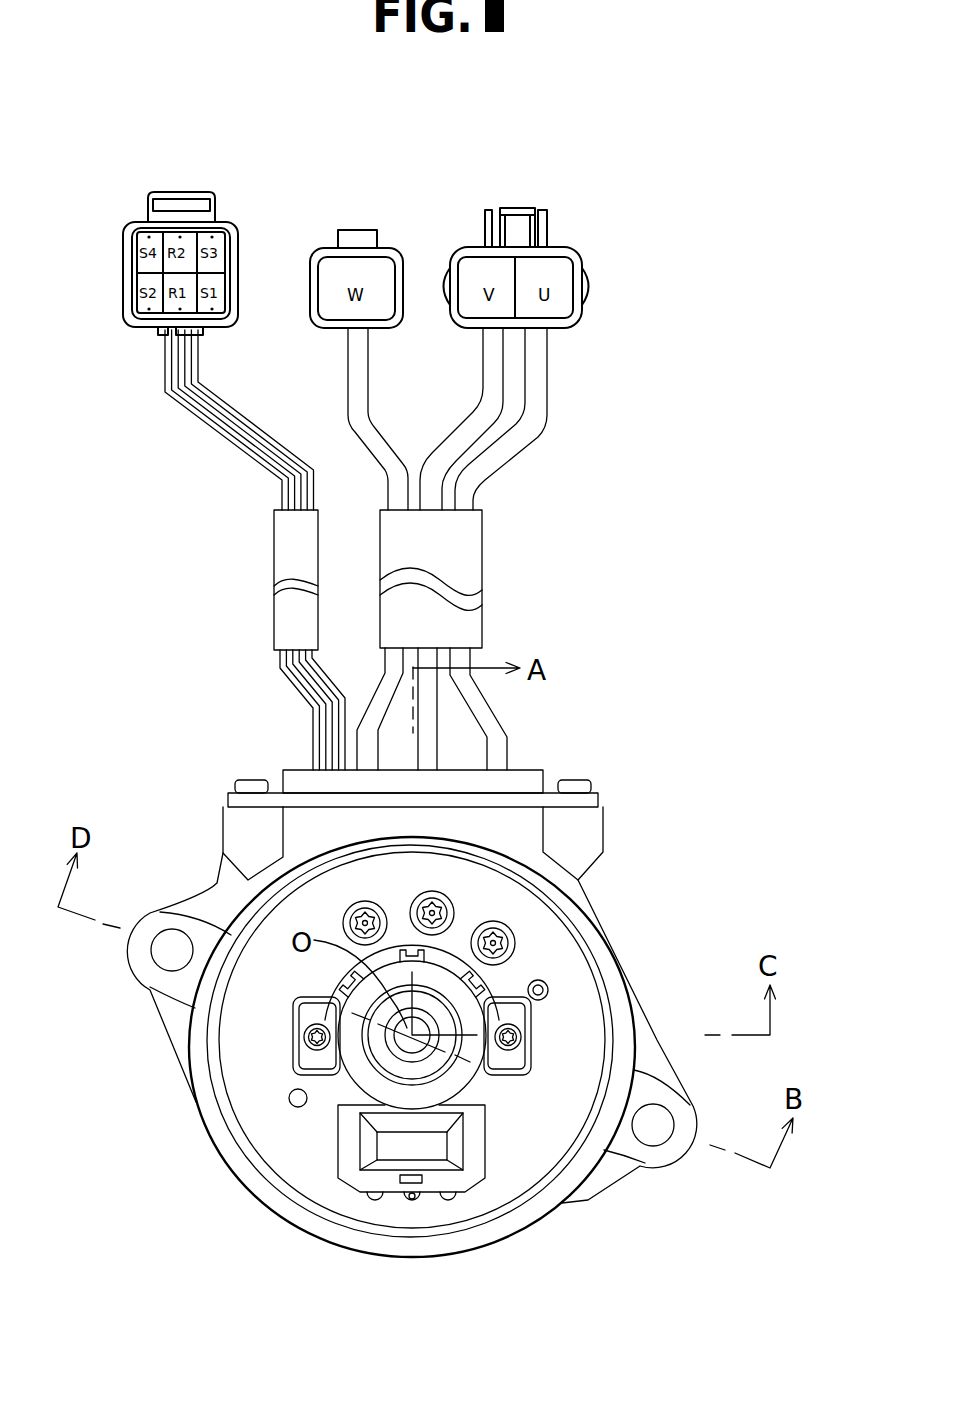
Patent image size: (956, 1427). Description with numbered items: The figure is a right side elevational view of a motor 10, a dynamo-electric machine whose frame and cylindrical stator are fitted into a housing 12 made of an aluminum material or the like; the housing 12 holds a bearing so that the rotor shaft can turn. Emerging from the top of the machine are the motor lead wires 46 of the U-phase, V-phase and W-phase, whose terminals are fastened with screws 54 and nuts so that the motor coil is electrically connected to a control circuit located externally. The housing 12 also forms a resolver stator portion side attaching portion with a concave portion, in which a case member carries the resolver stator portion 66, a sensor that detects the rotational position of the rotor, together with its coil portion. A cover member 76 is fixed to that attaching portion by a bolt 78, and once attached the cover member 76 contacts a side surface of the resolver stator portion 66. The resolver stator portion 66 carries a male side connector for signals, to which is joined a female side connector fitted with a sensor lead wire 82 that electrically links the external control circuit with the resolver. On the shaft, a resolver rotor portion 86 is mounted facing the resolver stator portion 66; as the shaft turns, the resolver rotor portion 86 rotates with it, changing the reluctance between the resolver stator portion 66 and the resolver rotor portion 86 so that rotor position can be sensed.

The motor 10 is at (642, 763).
The housing 12 is at (617, 933).
The motor lead wires 46 is at (370, 698).
The screws 54 is at (363, 901).
The resolver stator portion 66 is at (340, 1103).
The cover member 76 is at (335, 1073).
The bolt 78 is at (297, 1023).
The sensor lead wire 82 is at (250, 713).
The resolver rotor portion 86 is at (450, 1055).